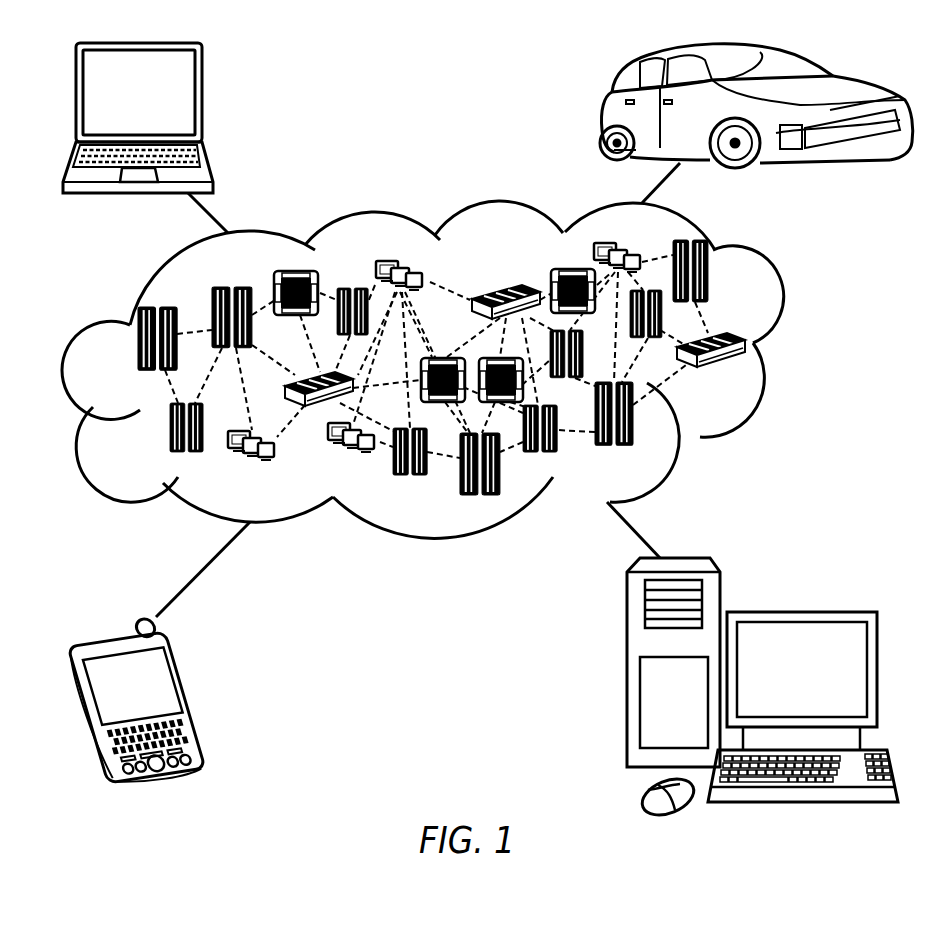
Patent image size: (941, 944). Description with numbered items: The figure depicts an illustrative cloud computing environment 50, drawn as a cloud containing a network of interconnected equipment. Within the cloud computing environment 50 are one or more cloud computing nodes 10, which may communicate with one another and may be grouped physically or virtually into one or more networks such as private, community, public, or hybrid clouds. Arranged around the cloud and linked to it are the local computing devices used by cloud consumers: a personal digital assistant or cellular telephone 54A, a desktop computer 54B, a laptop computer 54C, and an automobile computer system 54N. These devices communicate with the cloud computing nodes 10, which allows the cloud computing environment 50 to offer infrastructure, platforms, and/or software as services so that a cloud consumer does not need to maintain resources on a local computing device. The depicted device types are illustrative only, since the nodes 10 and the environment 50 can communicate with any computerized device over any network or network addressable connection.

The cloud computing node 10 is at (752, 380).
The cloud computing environment 50 is at (800, 346).
The personal digital assistant or cellular telephone 54A is at (190, 698).
The desktop computer 54B is at (798, 612).
The laptop computer 54C is at (203, 101).
The automobile computer system 54N is at (600, 110).